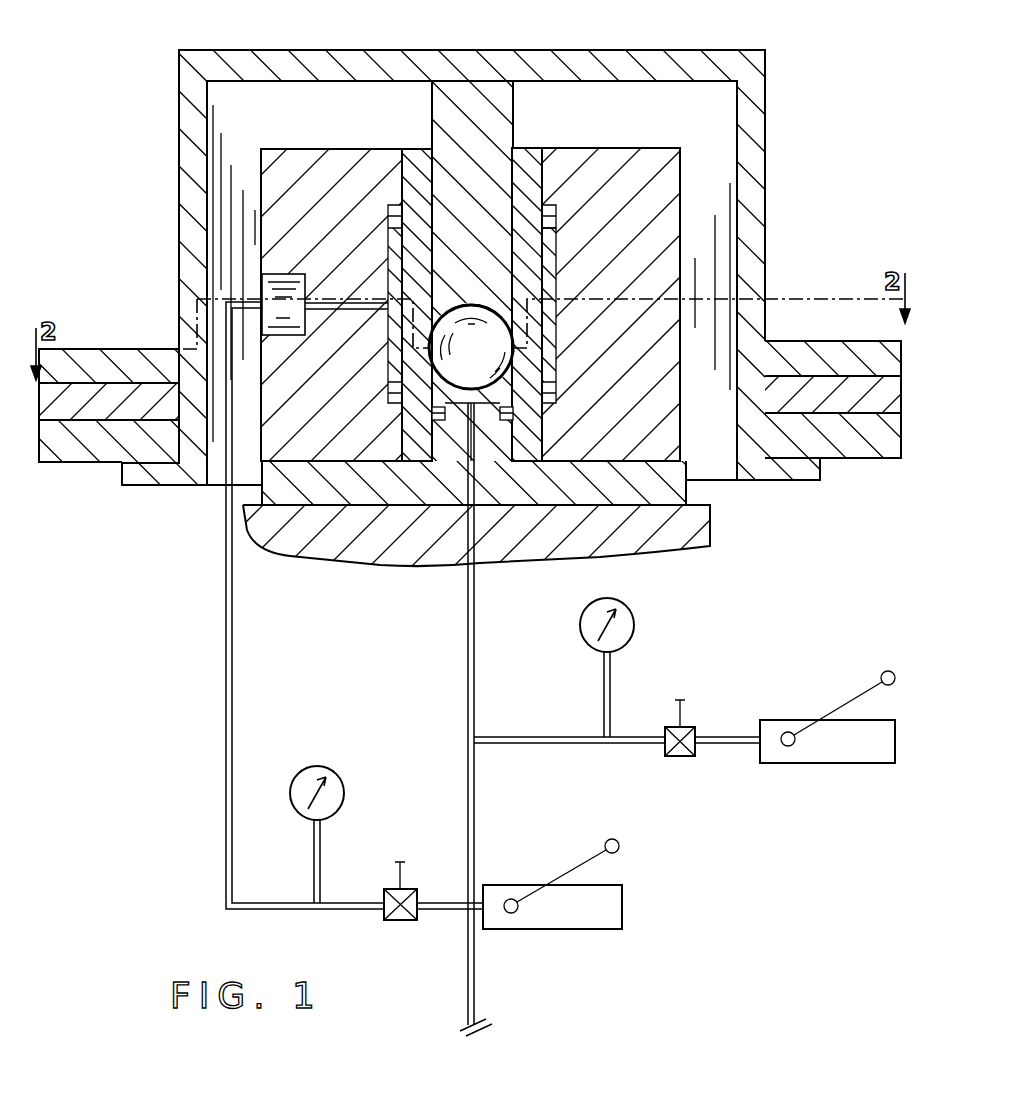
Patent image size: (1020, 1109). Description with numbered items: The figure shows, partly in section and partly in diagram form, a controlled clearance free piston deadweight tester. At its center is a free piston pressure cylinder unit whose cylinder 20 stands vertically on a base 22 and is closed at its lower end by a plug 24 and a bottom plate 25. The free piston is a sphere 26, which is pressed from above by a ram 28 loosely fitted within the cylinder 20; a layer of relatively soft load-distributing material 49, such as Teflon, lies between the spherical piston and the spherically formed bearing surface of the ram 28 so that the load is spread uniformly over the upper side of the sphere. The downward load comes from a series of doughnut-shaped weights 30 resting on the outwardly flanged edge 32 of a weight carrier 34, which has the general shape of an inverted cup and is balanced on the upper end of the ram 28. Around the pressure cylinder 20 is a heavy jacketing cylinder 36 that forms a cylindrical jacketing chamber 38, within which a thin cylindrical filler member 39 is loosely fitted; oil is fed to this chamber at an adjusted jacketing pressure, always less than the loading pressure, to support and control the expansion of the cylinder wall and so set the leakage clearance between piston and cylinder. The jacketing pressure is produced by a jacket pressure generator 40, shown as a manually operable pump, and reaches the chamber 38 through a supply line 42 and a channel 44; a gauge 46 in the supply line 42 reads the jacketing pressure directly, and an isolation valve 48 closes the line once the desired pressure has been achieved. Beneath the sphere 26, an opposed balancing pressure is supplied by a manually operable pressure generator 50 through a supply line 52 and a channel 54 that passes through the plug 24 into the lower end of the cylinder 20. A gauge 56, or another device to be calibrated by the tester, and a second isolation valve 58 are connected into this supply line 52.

The cylinder 20 is at (418, 160).
The base 22 is at (340, 540).
The plug 24 is at (495, 480).
The bottom plate 25 is at (585, 495).
The sphere 26 is at (488, 356).
The ram 28 is at (482, 104).
The weights 30 is at (823, 344).
The outwardly flanged edge 32 is at (800, 474).
The weight carrier 34 is at (610, 50).
The jacketing cylinder 36 is at (600, 165).
The jacketing chamber 38 is at (548, 294).
The filler member 39 is at (557, 229).
The jacket pressure generator 40 is at (612, 895).
The supply line 42 is at (224, 692).
The channel 44 is at (337, 298).
The gauge 46 is at (333, 792).
The isolation valve 48 is at (396, 893).
The load-distributing material 49 is at (460, 304).
The pressure generator 50 is at (768, 726).
The supply line 52 is at (467, 625).
The channel 54 is at (463, 450).
The gauge 56 is at (580, 631).
The isolation valve 58 is at (680, 752).